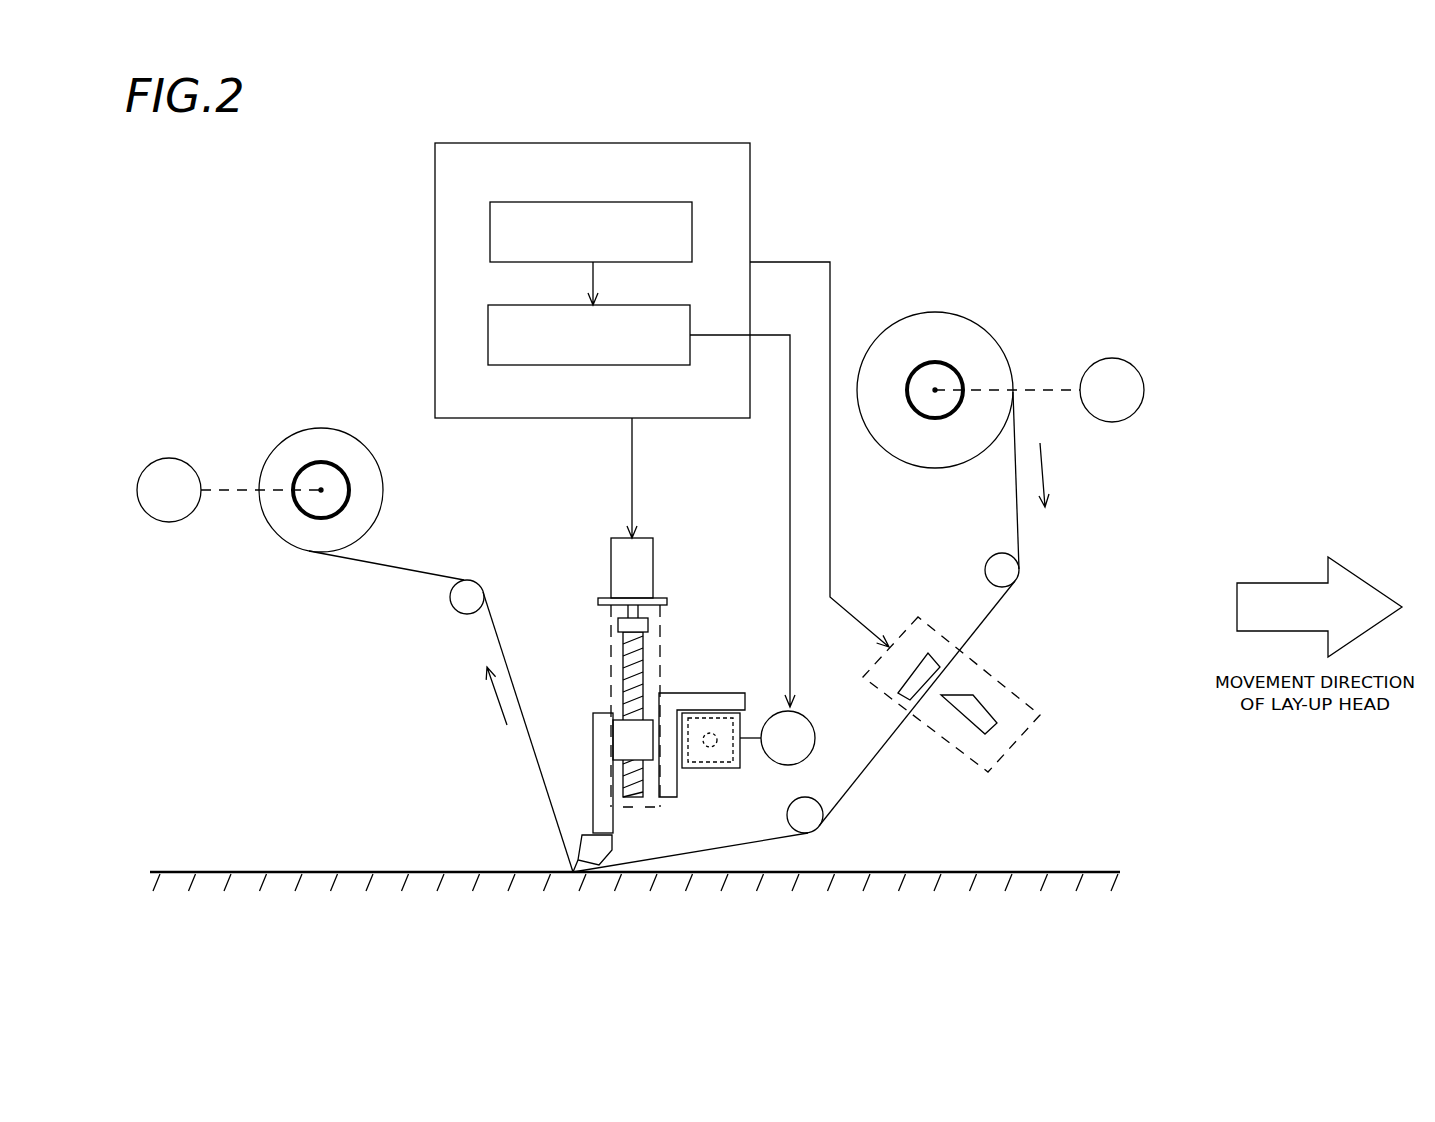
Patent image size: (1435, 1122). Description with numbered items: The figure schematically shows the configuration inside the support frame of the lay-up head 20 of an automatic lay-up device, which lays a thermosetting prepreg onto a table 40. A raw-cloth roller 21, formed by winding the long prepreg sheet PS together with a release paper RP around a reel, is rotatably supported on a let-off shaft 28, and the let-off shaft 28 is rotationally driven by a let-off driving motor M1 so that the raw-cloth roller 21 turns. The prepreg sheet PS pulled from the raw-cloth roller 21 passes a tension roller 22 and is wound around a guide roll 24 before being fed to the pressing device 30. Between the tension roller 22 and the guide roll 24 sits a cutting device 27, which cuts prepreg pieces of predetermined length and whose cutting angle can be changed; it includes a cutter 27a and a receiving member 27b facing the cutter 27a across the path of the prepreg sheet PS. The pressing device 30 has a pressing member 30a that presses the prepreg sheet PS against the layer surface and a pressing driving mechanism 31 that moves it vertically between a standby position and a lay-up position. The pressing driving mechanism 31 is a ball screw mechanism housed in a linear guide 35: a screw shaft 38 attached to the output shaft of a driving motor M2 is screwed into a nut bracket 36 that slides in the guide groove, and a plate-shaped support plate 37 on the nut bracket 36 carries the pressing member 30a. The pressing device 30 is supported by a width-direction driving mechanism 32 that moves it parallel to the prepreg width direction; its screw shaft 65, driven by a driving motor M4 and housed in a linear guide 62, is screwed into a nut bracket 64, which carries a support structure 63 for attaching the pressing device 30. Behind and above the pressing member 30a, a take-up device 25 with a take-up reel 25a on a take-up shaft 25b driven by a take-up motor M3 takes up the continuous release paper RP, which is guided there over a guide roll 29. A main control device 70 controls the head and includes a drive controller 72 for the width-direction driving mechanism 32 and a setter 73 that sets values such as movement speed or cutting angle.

The lay-up head 20 is at (1174, 246).
The raw-cloth roller 21 is at (958, 354).
The tension roller 22 is at (1000, 553).
The guide roll 24 is at (825, 830).
The take-up device 25 is at (250, 566).
The take-up reel 25a is at (298, 535).
The take-up shaft 25b is at (297, 513).
The cutting device 27 is at (989, 683).
The cutter 27a is at (993, 730).
The receiving member 27b is at (932, 625).
The let-off shaft 28 is at (920, 362).
The guide roll 29 is at (457, 605).
The pressing device 30 is at (539, 510).
The pressing member 30a is at (607, 873).
The pressing driving mechanism 31 is at (586, 577).
The width-direction driving mechanism 32 is at (738, 584).
The linear guide 35 is at (598, 637).
The nut bracket 36 is at (618, 710).
The support plate 37 is at (590, 748).
The screw shaft 38 is at (618, 672).
The table 40 is at (1122, 849).
The linear guide 62 is at (712, 768).
The support structure 63 is at (680, 667).
The nut bracket 64 is at (732, 683).
The screw shaft 65 is at (738, 767).
The main control device 70 is at (616, 397).
The drive controller 72 is at (488, 333).
The setter 73 is at (490, 228).
The let-off driving motor M1 is at (1145, 398).
The driving motor M2 is at (652, 540).
The take-up motor M3 is at (158, 522).
The driving motor M4 is at (806, 712).
The release paper RP is at (382, 567).
The prepreg sheet PS is at (460, 870).